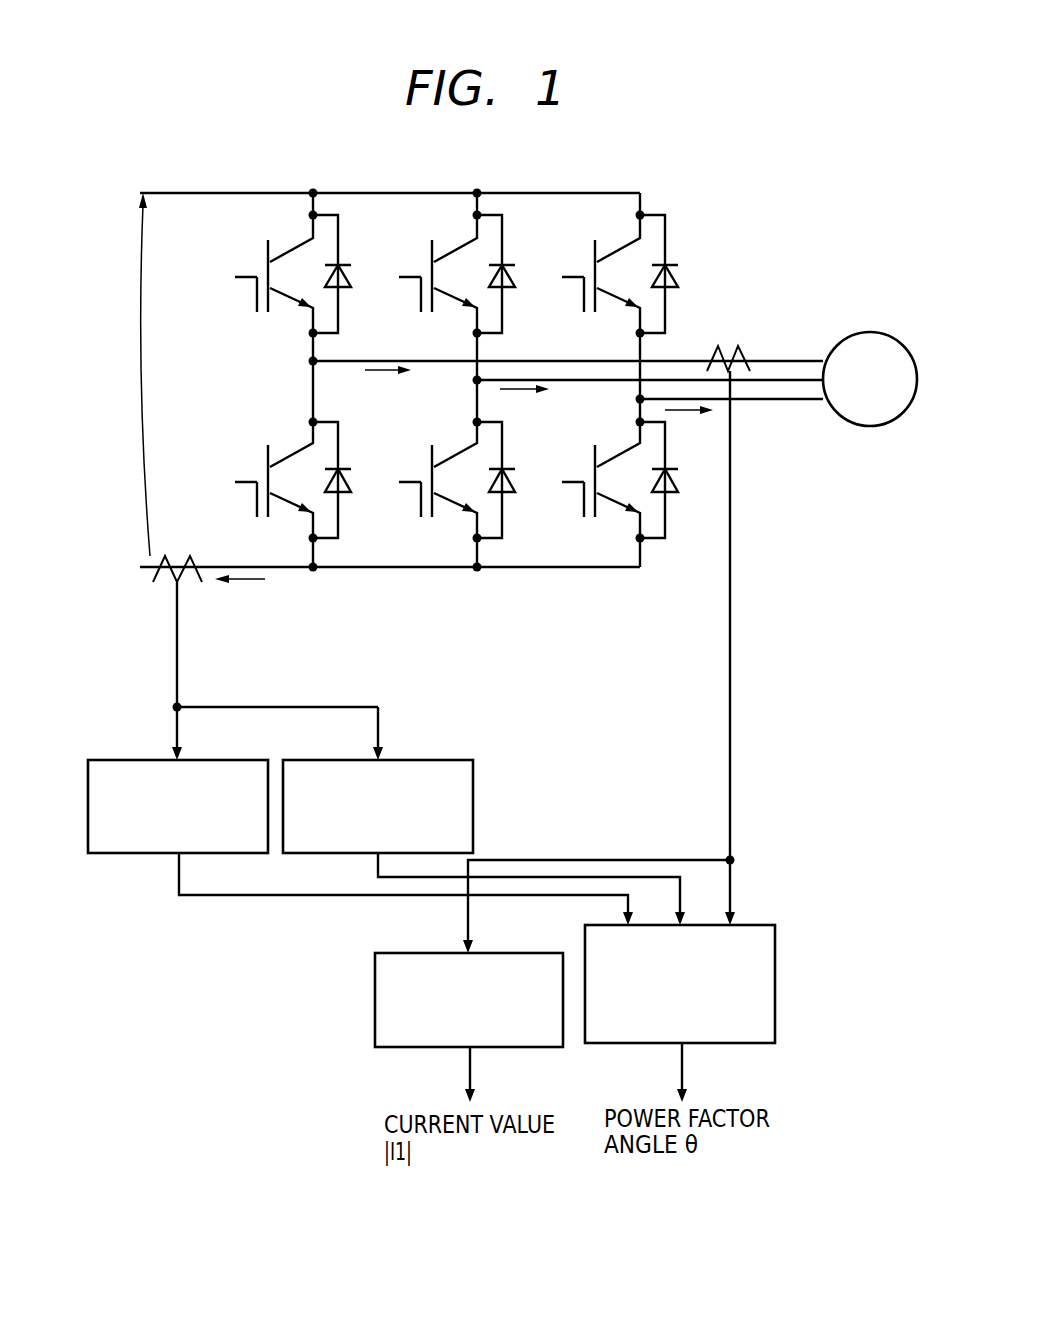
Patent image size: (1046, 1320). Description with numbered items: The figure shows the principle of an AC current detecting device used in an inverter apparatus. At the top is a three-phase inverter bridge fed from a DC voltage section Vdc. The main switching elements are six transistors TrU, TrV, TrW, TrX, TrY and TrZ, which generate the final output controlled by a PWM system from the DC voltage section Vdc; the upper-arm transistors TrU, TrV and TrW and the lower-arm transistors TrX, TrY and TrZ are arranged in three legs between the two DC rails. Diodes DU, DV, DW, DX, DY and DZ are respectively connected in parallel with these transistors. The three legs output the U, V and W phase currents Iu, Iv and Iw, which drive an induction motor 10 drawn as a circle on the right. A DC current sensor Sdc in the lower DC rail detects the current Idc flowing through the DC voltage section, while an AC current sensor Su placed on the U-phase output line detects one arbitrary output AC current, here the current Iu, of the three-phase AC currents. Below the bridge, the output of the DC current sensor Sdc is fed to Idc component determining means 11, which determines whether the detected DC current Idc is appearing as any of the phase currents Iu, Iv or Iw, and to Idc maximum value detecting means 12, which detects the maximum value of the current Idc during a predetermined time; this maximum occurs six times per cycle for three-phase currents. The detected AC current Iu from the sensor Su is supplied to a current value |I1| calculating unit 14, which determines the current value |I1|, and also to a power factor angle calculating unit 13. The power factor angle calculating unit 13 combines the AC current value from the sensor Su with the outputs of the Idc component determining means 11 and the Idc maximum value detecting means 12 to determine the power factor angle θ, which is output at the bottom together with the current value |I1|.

The induction motor 10 is at (885, 333).
The Idc component determining means 11 is at (88, 782).
The Idc maximum value detecting means 12 is at (473, 782).
The power factor angle calculating unit 13 is at (775, 955).
The current value |I1| calculating unit 14 is at (375, 990).
The transistor TrU is at (266, 245).
The transistor TrV is at (430, 245).
The transistor TrW is at (592, 245).
The transistor TrX is at (262, 520).
The transistor TrY is at (426, 520).
The transistor TrZ is at (589, 520).
The diode DU is at (343, 290).
The diode DV is at (507, 290).
The diode DW is at (670, 290).
The diode DX is at (343, 495).
The diode DY is at (507, 495).
The diode DZ is at (670, 495).
The AC current sensor Su is at (740, 346).
The DC current sensor Sdc is at (190, 557).
The DC voltage section Vdc is at (144, 378).
The U-phase current Iu is at (377, 372).
The V-phase current Iv is at (515, 391).
The W-phase current Iw is at (680, 412).
The DC current Idc is at (244, 581).